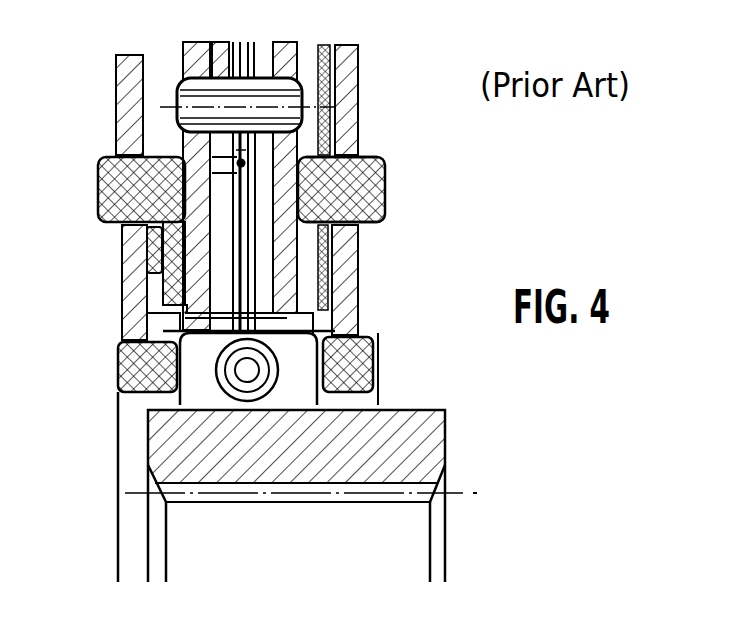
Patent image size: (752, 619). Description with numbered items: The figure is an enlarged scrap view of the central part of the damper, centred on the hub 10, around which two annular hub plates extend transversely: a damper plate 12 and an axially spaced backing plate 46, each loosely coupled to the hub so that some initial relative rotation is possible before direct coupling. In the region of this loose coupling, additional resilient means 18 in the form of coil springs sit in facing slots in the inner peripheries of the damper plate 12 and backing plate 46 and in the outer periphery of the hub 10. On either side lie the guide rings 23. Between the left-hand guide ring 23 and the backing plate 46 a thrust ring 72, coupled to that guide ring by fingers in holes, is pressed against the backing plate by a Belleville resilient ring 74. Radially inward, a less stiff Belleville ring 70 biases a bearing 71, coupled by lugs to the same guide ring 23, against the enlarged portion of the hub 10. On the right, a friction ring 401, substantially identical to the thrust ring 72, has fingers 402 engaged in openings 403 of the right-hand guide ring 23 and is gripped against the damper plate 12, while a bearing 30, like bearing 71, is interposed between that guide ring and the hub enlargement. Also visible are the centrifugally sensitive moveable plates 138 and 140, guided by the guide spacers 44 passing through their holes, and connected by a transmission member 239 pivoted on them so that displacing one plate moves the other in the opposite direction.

The hub 10 is at (435, 428).
The damper plate 12 is at (280, 54).
The resilient means 18 is at (208, 382).
The guide ring 23 is at (116, 90).
The bearing 30 is at (375, 368).
The guide spacer 44 is at (240, 78).
The backing plate 46 is at (197, 62).
The Belleville ring 70 is at (122, 310).
The bearing 71 is at (118, 362).
The thrust ring 72 is at (118, 193).
The resilient ring 74 is at (122, 246).
The moveable plate 138 is at (322, 92).
The moveable plate 140 is at (237, 150).
The transmission member 239 is at (240, 185).
The friction ring 401 is at (380, 150).
The fingers 402 is at (387, 183).
The openings 403 is at (385, 225).